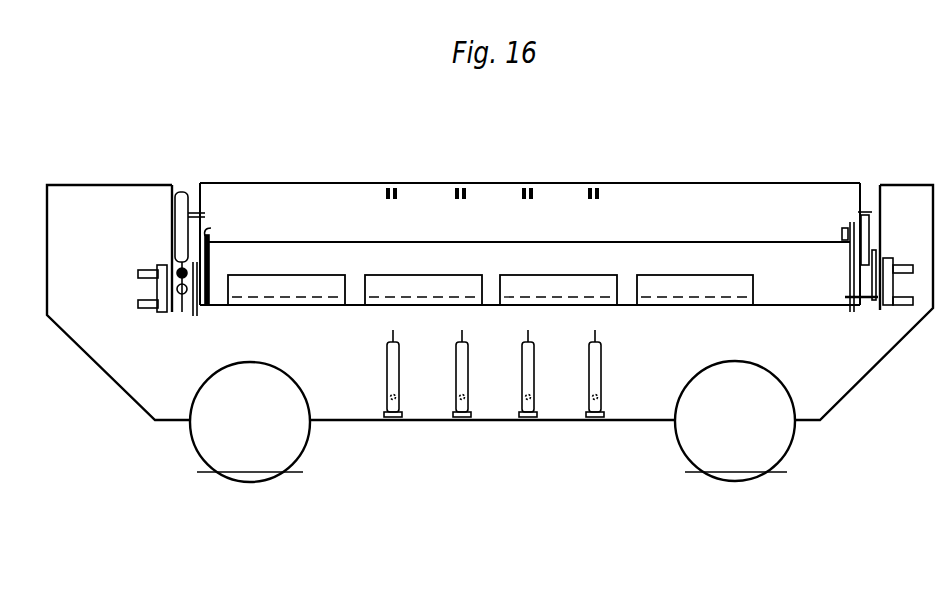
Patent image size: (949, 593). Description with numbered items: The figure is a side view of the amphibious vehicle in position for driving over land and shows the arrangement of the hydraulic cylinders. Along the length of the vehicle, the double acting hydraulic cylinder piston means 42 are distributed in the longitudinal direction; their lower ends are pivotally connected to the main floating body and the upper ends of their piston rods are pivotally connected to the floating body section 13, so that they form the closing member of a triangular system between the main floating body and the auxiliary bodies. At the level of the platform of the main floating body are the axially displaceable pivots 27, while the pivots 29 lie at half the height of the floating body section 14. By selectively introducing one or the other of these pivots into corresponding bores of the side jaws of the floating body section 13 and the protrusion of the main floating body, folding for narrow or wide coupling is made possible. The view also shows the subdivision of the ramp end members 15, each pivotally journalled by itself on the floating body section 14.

The floating body section 13 is at (337, 194).
The floating body section 14 is at (285, 248).
The ramp end members 15 is at (320, 282).
The axially displaceable pivots 27 is at (142, 309).
The pivots 29 is at (152, 269).
The hydraulic cylinder piston means 42 is at (460, 382).